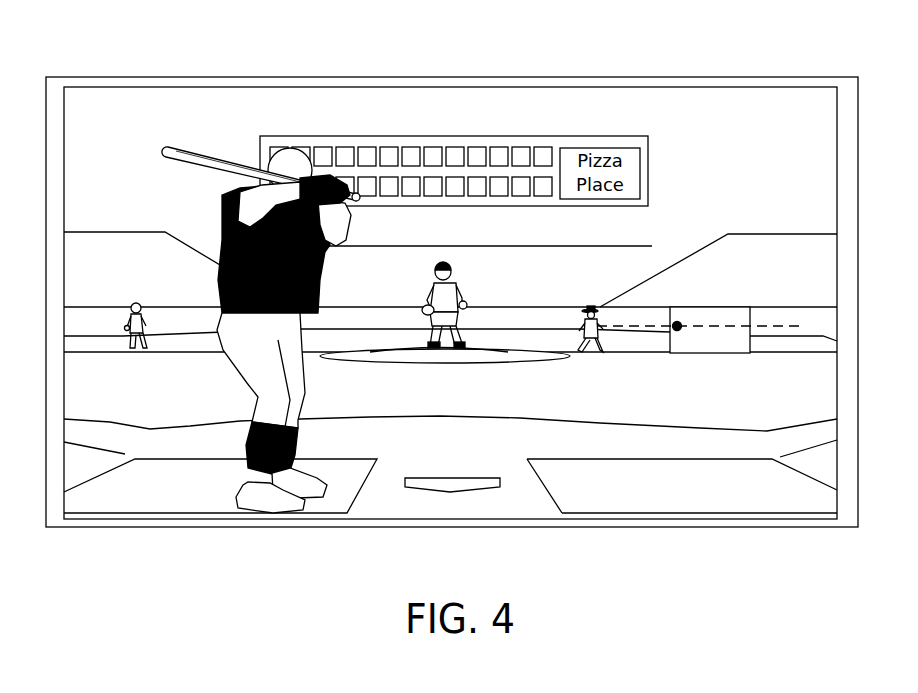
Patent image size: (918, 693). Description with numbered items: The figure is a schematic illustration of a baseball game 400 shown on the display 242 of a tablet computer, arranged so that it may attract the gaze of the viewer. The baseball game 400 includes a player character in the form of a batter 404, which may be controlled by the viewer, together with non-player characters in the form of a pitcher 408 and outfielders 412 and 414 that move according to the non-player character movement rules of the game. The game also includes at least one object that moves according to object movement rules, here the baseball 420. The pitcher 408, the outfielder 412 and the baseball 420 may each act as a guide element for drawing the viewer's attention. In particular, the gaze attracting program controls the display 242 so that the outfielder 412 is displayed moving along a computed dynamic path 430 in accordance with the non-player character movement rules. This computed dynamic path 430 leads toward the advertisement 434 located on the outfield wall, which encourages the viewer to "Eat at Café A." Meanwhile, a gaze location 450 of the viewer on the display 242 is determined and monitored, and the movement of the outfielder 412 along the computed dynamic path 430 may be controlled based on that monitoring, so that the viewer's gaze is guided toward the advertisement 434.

The display 242 is at (236, 77).
The baseball game 400 is at (656, 104).
The batter 404 is at (222, 243).
The pitcher 408 is at (430, 300).
The outfielder 412 is at (585, 312).
The outfielder 414 is at (128, 318).
The baseball 420 is at (468, 307).
The computed dynamic path 430 is at (623, 327).
The advertisement 434 is at (740, 307).
The gaze location 450 is at (673, 325).